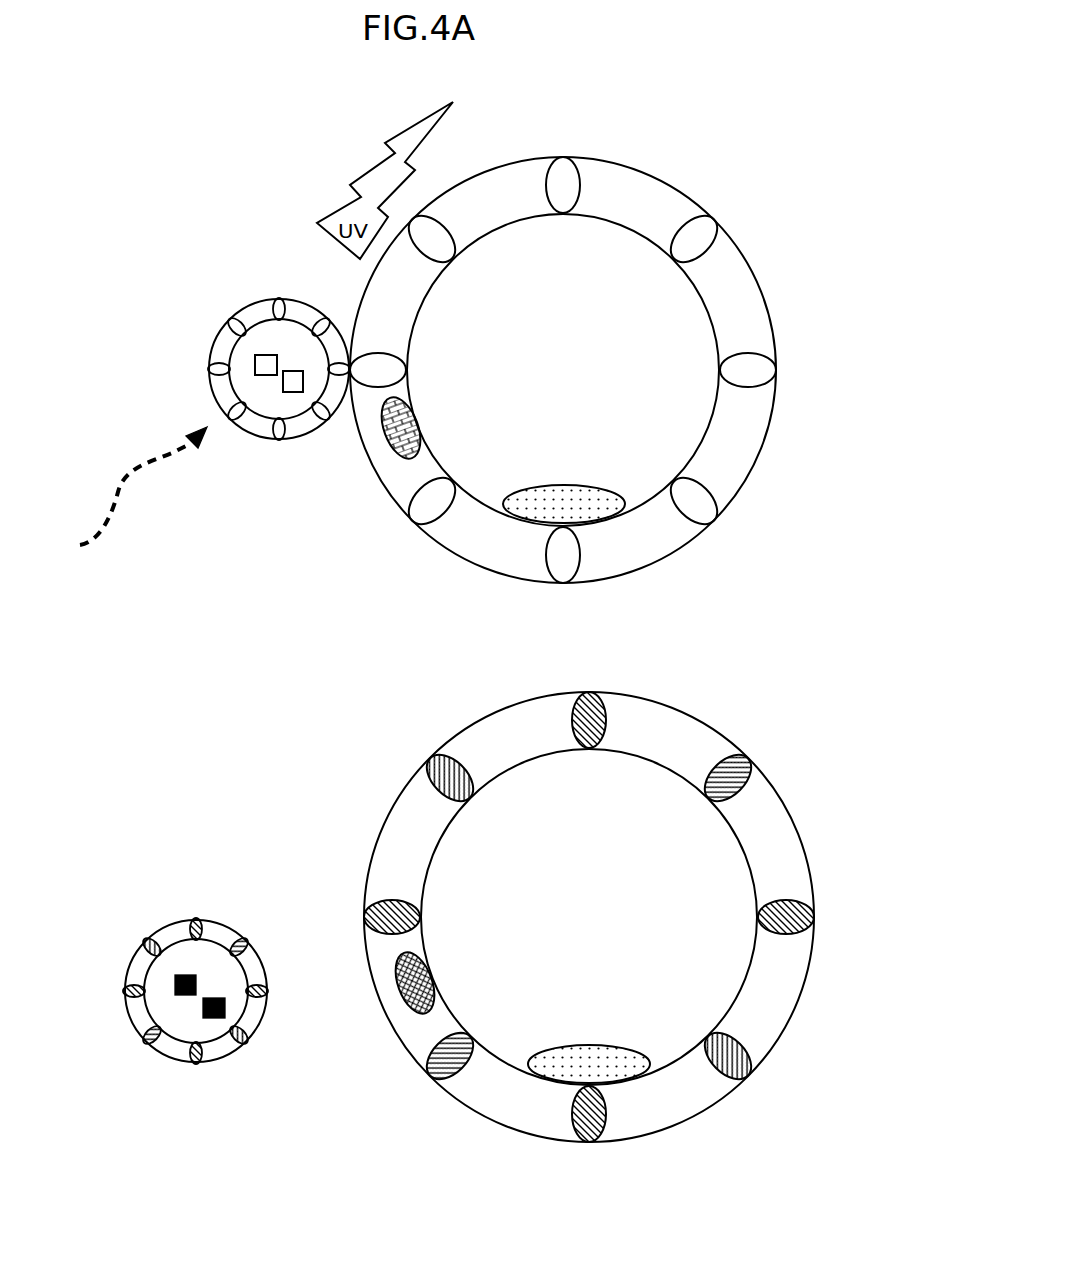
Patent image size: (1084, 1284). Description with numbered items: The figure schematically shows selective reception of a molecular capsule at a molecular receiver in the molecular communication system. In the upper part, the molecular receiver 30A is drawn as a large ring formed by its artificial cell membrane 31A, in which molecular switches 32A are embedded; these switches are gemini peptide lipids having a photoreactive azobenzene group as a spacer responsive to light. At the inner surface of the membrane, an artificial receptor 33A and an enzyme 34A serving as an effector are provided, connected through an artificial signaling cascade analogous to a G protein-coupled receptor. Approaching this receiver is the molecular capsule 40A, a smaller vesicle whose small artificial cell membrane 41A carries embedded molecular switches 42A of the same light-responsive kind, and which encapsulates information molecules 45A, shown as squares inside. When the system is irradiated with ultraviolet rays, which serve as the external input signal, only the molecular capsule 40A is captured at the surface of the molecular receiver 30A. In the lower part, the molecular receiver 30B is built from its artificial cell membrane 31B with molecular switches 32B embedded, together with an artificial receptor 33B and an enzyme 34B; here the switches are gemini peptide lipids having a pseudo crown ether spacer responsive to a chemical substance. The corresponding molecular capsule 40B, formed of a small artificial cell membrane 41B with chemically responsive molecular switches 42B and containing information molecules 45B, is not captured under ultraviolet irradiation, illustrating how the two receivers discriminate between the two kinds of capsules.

The molecular receiver 30A is at (563, 354).
The artificial cell membrane 31A is at (491, 546).
The molecular switches 32A is at (416, 222).
The artificial receptor 33A is at (407, 418).
The enzyme 34A is at (568, 485).
The molecular capsule 40A is at (232, 370).
The artificial cell membrane 41A is at (218, 397).
The molecular switches 42A is at (321, 328).
The information molecules 45A is at (262, 356).
The molecular receiver 30B is at (579, 917).
The artificial cell membrane 31B is at (470, 736).
The molecular switches 32B is at (430, 1070).
The artificial receptor 33B is at (428, 973).
The enzyme 34B is at (606, 1046).
The molecular capsule 40B is at (149, 1000).
The artificial cell membrane 41B is at (136, 1017).
The molecular switches 42B is at (243, 1046).
The information molecules 45B is at (175, 980).